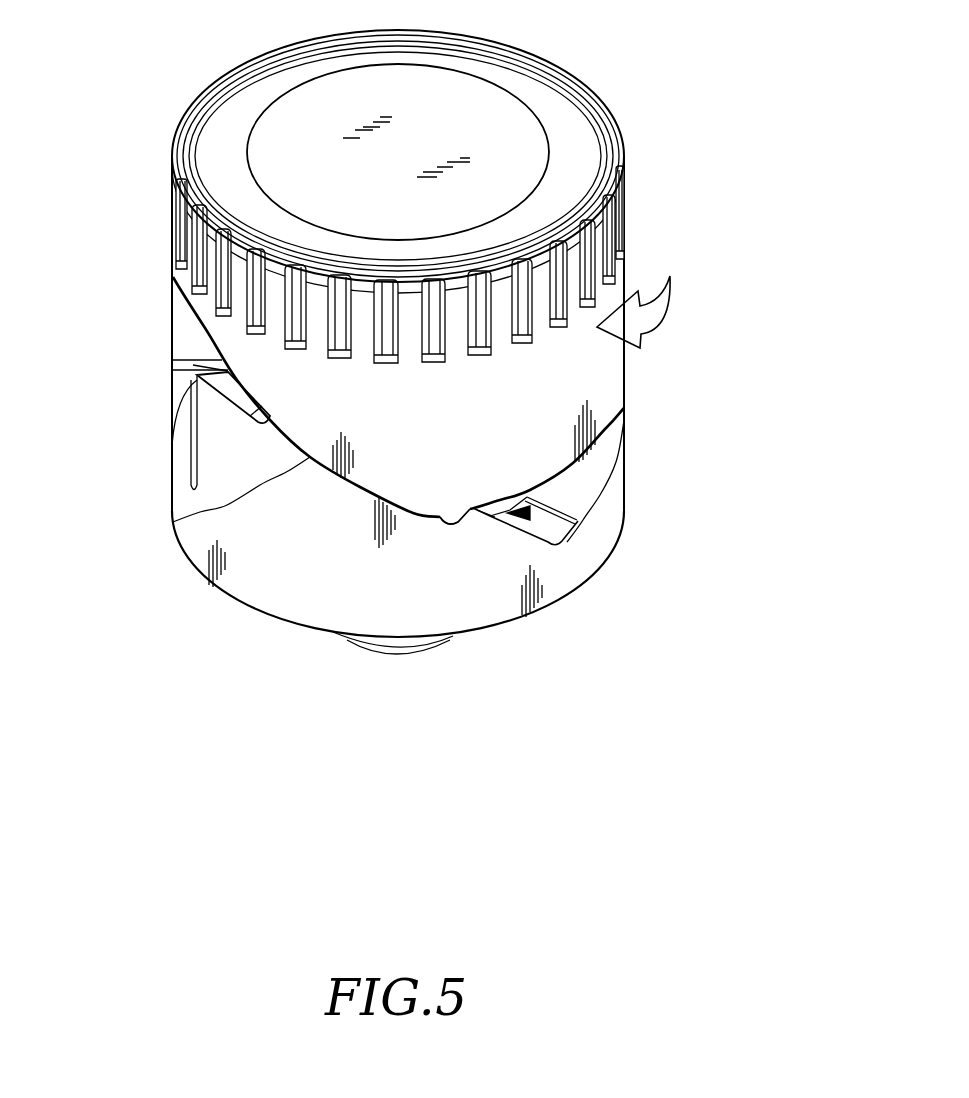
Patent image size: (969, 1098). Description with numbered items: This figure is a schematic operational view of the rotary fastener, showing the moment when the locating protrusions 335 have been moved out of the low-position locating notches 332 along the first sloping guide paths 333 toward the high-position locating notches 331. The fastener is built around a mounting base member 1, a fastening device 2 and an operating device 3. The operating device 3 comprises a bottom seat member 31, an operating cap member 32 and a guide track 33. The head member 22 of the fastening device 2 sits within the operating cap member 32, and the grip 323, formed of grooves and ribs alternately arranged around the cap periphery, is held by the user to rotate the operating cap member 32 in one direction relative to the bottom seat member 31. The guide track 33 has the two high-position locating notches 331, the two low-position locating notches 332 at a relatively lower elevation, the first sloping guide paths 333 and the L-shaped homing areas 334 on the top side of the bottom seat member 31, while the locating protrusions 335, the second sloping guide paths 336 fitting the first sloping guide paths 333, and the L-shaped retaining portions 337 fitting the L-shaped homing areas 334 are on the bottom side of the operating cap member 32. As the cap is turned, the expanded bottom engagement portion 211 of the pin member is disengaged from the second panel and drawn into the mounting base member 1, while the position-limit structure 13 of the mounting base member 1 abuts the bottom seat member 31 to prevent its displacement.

The mounting base member 1 is at (702, 554).
The fastening device 2 is at (445, 192).
The head member 22 is at (512, 120).
The grip 323 is at (600, 242).
The operating device 3 is at (716, 380).
The operating cap member 32 is at (607, 385).
The bottom seat member 31 is at (245, 593).
The expanded bottom engagement portion 211 is at (377, 647).
The guide track 33 is at (88, 401).
The high-position locating notches 331 is at (195, 386).
The low-position locating notches 332 is at (553, 540).
The first sloping guide paths 333 is at (477, 527).
The L-shaped homing areas 334 is at (185, 450).
The locating protrusions 335 is at (454, 514).
The second sloping guide paths 336 is at (176, 518).
The L-shaped retaining portions 337 is at (182, 325).
The position-limit structure 13 is at (413, 514).